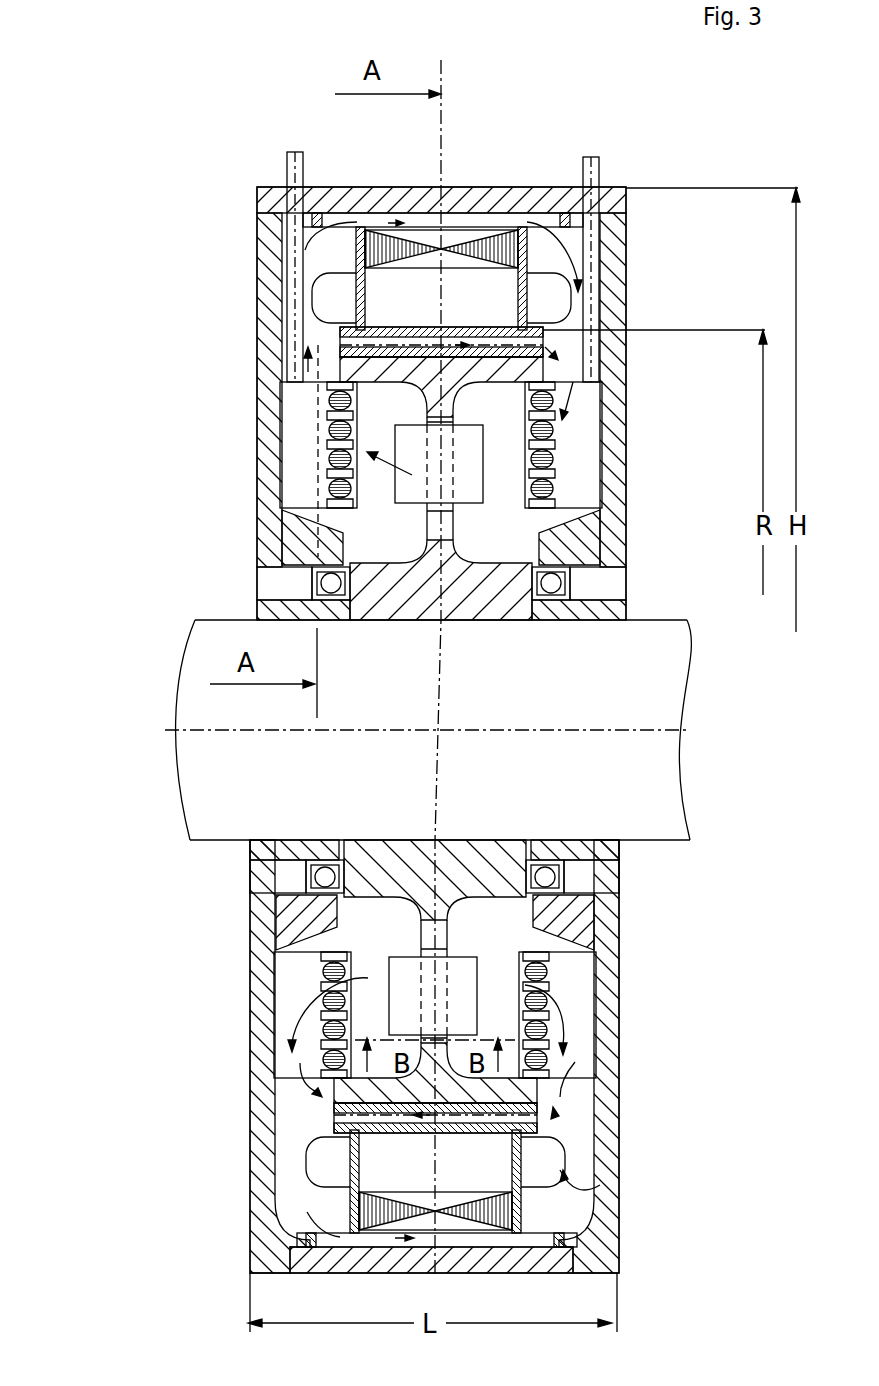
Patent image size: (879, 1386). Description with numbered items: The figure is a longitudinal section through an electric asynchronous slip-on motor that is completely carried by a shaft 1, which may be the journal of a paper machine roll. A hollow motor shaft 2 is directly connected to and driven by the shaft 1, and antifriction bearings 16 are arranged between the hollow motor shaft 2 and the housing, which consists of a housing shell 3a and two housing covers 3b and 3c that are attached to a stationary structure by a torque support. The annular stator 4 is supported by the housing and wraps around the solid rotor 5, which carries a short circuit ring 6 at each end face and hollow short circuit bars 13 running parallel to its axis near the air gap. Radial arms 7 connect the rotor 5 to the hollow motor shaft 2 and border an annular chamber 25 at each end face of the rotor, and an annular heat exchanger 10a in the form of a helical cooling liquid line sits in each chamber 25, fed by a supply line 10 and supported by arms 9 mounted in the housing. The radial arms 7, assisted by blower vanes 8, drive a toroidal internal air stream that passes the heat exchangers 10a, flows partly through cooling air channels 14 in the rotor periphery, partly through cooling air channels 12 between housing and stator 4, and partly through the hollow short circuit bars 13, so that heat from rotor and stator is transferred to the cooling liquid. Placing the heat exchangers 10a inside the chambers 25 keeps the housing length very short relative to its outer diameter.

The shaft 1 is at (660, 640).
The hollow motor shaft 2 is at (421, 363).
The housing shell 3a is at (473, 197).
The housing cover 3b is at (265, 268).
The housing cover 3c is at (617, 278).
The stator 4 is at (547, 302).
The rotor 5 is at (505, 366).
The short circuit ring 6 is at (302, 415).
The radial arms 7 is at (463, 430).
The blower vanes 8 is at (470, 470).
The arms 9 is at (302, 430).
The supply line 10 is at (592, 167).
The annular heat exchanger 10a is at (330, 395).
The cooling air channels 12 is at (425, 222).
The hollow short circuit bars 13 is at (330, 343).
The cooling air channels 14 is at (330, 327).
The antifriction bearings 16 is at (305, 572).
The annular chamber 25 is at (400, 525).